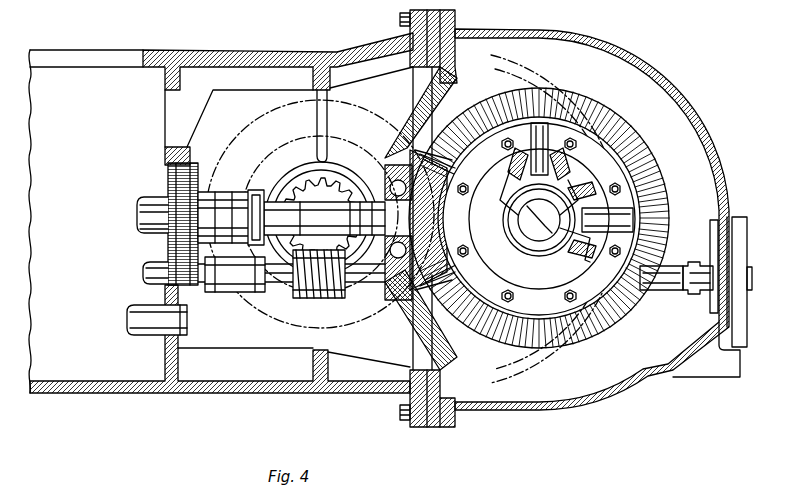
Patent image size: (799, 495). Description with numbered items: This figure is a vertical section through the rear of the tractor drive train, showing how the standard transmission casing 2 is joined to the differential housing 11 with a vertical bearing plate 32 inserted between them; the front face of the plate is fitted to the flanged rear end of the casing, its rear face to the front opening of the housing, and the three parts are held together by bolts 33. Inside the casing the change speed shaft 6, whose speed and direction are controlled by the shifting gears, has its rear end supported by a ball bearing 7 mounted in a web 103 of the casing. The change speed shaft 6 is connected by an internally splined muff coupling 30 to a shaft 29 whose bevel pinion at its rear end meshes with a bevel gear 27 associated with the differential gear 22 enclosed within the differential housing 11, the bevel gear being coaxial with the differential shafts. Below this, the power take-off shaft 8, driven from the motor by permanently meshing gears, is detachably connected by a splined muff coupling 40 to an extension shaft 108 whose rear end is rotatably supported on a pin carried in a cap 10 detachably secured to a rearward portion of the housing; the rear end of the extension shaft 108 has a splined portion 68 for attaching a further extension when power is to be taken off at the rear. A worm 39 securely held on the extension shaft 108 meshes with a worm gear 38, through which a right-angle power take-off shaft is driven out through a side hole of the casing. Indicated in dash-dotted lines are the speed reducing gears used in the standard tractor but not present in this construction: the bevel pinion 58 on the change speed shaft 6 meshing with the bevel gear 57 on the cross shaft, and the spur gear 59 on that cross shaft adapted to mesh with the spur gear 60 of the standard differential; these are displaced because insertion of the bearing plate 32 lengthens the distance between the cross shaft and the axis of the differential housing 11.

The transmission casing 2 is at (197, 52).
The change speed shaft 6 is at (142, 196).
The ball bearing 7 is at (167, 182).
The power take-off shaft 8 is at (143, 274).
The cap 10 is at (734, 216).
The differential housing 11 is at (494, 410).
The differential gear 22 is at (488, 259).
The bevel gear 27 is at (552, 92).
The shaft 29 is at (384, 162).
The internally splined muff coupling 30 is at (252, 190).
The vertical bearing plate 32 is at (432, 427).
The bolts 33 is at (400, 18).
The worm gear 38 is at (342, 150).
The worm 39 is at (340, 294).
The splined muff coupling 40 is at (221, 293).
The bevel gear 57 is at (367, 120).
The bevel pinion 58 is at (232, 162).
The spur gear 59 is at (300, 150).
The spur gear 60 is at (683, 117).
The splined portion 68 is at (701, 294).
The web 103 is at (163, 352).
The extension shaft 108 is at (661, 292).